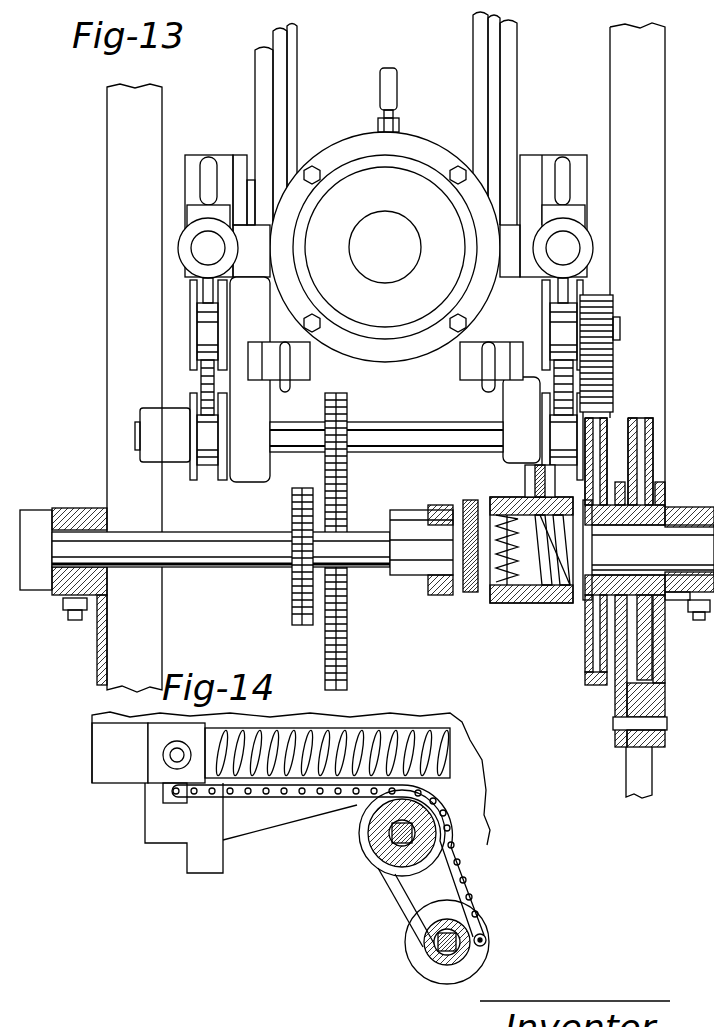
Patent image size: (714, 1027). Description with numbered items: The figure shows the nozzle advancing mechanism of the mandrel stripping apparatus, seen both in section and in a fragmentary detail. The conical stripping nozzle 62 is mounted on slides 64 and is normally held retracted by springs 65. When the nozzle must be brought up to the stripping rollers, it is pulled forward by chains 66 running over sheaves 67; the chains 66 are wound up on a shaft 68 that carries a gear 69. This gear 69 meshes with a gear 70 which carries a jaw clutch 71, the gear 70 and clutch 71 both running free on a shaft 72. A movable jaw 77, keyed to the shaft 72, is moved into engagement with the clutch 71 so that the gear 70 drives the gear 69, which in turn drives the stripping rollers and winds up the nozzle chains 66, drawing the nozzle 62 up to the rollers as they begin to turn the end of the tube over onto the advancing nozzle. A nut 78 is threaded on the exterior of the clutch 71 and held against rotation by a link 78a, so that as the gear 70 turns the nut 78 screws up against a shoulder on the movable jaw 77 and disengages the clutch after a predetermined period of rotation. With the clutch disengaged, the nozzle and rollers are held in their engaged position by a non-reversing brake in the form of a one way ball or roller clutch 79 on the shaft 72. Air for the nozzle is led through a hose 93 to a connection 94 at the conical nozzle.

In FIG. 13, the stripping nozzle 62 is at (385, 247).
In FIG. 14, the stripping nozzle 62 is at (262, 823).
In FIG. 13, the slides 64 is at (385, 216).
In FIG. 14, the slides 64 is at (378, 735).
In FIG. 14, the springs 65 is at (330, 735).
In FIG. 13, the chains 66 is at (207, 392).
In FIG. 14, the chains 66 is at (298, 800).
In FIG. 13, the sheaves 67 is at (208, 330).
In FIG. 14, the sheaves 67 is at (385, 860).
In FIG. 13, the shaft 68 is at (395, 450).
In FIG. 14, the shaft 68 is at (420, 945).
In FIG. 13, the gear 69 is at (600, 376).
In FIG. 13, the gear 70 is at (592, 683).
In FIG. 13, the jaw clutch 71 is at (518, 605).
In FIG. 13, the shaft 72 is at (248, 570).
In FIG. 13, the movable jaw 77 is at (478, 598).
In FIG. 13, the nut 78 is at (562, 605).
In FIG. 13, the link 78a is at (525, 482).
In FIG. 13, the one way ball or roller clutch 79 is at (620, 707).
In FIG. 13, the hose 93 is at (398, 92).
In FIG. 13, the connection 94 is at (399, 126).